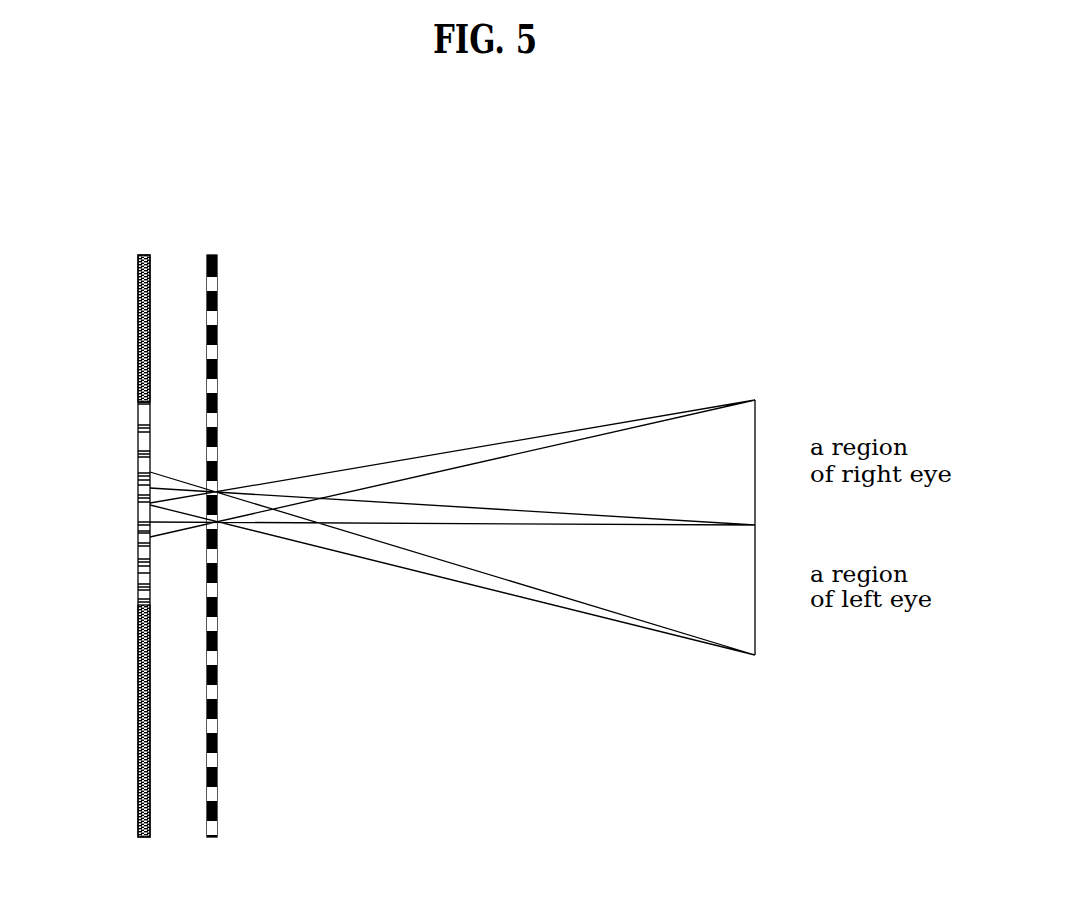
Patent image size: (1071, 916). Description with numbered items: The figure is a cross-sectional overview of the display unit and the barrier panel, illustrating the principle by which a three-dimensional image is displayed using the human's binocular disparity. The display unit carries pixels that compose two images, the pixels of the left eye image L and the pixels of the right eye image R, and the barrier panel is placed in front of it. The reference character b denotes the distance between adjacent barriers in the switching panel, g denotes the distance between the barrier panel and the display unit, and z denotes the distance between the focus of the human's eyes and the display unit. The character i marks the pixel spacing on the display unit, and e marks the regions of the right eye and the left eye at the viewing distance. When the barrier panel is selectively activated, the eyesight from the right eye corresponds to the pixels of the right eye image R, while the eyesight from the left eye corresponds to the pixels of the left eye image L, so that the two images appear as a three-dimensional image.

The distance between adjacent barriers b is at (218, 388).
The distance between barrier panel and display unit g is at (206, 803).
The distance between eye focus and display unit z is at (753, 853).
The pixel pitch i is at (103, 520).
The eye region width e is at (773, 655).
The left eye image L is at (118, 489).
The right eye image R is at (120, 509).